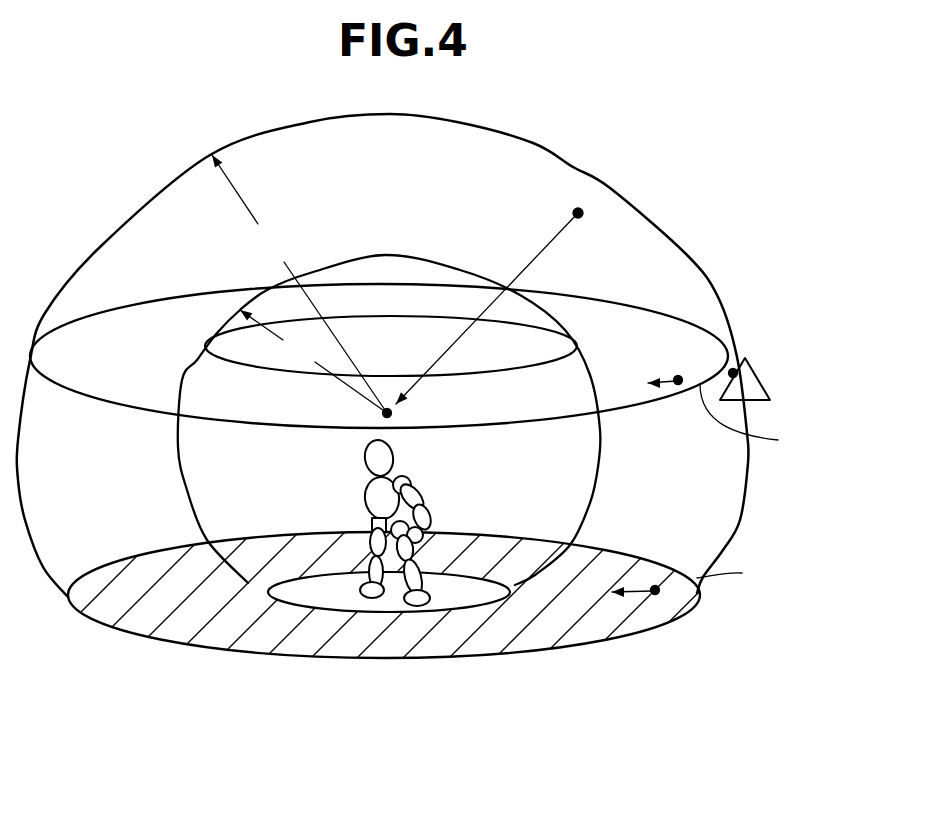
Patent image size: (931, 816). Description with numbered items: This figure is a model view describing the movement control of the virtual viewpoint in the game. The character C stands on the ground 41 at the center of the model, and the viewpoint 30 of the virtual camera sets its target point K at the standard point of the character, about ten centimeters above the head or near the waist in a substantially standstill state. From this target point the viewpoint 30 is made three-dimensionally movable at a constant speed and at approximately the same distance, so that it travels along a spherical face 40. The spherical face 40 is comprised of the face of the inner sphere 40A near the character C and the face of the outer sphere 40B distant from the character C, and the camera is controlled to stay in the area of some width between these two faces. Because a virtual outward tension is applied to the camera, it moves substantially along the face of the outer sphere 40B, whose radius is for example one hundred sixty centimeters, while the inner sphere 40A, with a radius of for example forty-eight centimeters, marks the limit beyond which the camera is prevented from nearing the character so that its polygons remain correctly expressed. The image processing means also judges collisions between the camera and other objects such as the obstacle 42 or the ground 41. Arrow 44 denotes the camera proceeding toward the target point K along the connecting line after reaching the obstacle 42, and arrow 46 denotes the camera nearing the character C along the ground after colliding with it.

The viewpoint of the virtual camera 30 is at (578, 213).
The spherical face 40 is at (722, 292).
The inner sphere 40A is at (600, 467).
The outer sphere 40B is at (747, 467).
The ground 41 is at (395, 600).
The obstacle 42 is at (765, 388).
The arrow 44 is at (759, 420).
The arrow 46 is at (739, 572).
The target point K is at (361, 413).
The character C is at (428, 480).